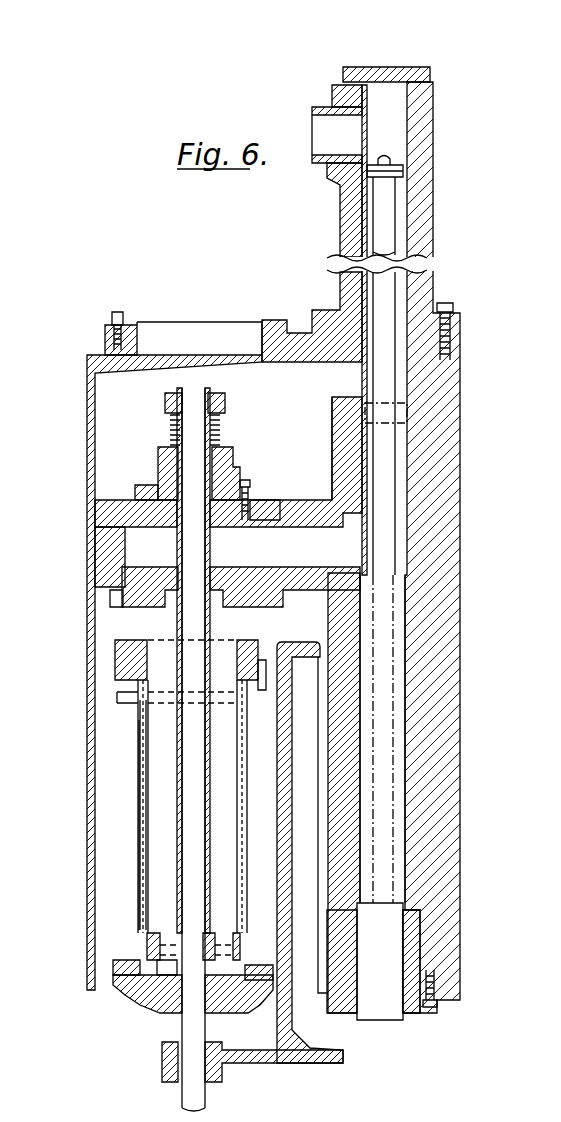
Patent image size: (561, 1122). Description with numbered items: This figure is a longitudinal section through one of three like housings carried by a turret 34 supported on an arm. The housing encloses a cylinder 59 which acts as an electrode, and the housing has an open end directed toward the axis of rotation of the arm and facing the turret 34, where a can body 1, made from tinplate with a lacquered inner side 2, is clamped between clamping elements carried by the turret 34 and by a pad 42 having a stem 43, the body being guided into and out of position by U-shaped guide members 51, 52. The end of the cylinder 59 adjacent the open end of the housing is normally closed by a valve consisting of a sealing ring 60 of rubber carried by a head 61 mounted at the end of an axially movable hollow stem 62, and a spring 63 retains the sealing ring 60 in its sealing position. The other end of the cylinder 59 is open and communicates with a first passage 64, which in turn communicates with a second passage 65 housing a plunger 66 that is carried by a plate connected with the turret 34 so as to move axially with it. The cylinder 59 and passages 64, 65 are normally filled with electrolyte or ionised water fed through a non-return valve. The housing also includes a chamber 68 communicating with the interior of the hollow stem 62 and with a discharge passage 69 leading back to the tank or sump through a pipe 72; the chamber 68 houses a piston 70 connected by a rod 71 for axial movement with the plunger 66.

The can body 1 is at (138, 855).
The side of can body 2 is at (153, 827).
The turret 34 is at (280, 645).
The pad 42 is at (223, 995).
The stem 43 is at (190, 1097).
The guide member 51 is at (117, 700).
The guide member 52 is at (120, 945).
The cylinder 59 is at (153, 755).
The sealing ring 60 is at (135, 990).
The head 61 is at (143, 1005).
The hollow stem 62 is at (177, 778).
The spring 63 is at (218, 433).
The first passage 64 is at (270, 540).
The second passage 65 is at (415, 613).
The plunger 66 is at (387, 735).
The chamber 68 is at (296, 391).
The discharge passage 69 is at (386, 233).
The piston 70 is at (402, 170).
The rod 71 is at (410, 255).
The pipe 72 is at (323, 141).